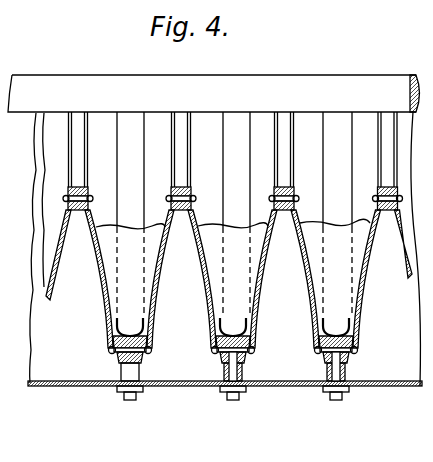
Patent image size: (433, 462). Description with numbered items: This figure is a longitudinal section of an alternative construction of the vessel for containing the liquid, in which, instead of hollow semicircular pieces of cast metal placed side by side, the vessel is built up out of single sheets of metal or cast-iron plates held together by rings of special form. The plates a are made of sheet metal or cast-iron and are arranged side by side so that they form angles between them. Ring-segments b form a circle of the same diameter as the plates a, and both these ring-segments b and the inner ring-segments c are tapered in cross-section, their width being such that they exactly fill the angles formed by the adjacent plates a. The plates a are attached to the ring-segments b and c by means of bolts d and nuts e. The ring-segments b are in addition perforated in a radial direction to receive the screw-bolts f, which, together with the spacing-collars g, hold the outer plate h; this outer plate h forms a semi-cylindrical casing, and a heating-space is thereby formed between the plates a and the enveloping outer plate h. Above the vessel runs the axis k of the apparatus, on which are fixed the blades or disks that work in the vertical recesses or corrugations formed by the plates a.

The axis k is at (214, 93).
The outer plate h is at (192, 386).
The ring-segments c is at (233, 176).
The nuts e is at (240, 199).
The plates a is at (88, 282).
The ring-segments b is at (147, 344).
The bolts d is at (110, 352).
The screw-bolts f is at (118, 372).
The spacing-collars g is at (139, 372).